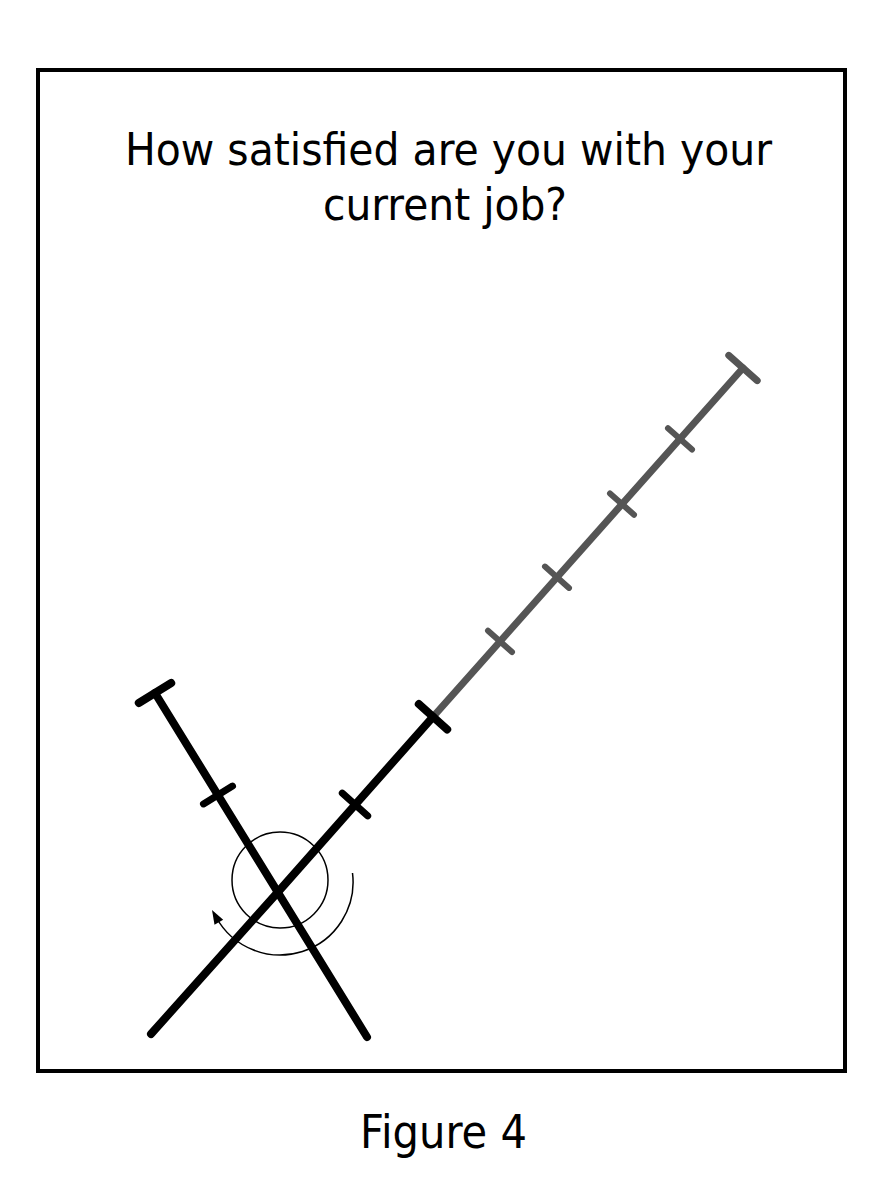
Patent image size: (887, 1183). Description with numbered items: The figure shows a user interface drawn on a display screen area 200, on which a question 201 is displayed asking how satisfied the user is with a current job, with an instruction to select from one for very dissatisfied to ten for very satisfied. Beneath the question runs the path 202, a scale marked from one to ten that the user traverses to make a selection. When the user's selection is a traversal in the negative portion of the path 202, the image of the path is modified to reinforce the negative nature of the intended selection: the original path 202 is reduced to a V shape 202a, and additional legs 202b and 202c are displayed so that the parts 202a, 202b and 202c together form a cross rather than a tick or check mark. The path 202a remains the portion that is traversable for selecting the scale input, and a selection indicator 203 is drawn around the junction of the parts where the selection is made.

The display screen area 200 is at (692, 70).
The question 201 is at (467, 268).
The path 202 is at (583, 548).
The V shape 202a is at (410, 750).
The leg 202b is at (347, 997).
The leg 202c is at (187, 988).
The selection indicator with rotation arrow 203 is at (327, 860).